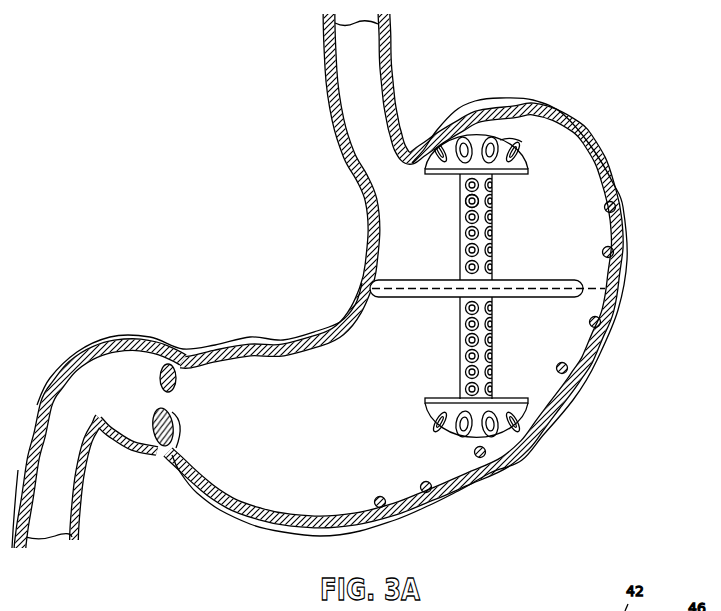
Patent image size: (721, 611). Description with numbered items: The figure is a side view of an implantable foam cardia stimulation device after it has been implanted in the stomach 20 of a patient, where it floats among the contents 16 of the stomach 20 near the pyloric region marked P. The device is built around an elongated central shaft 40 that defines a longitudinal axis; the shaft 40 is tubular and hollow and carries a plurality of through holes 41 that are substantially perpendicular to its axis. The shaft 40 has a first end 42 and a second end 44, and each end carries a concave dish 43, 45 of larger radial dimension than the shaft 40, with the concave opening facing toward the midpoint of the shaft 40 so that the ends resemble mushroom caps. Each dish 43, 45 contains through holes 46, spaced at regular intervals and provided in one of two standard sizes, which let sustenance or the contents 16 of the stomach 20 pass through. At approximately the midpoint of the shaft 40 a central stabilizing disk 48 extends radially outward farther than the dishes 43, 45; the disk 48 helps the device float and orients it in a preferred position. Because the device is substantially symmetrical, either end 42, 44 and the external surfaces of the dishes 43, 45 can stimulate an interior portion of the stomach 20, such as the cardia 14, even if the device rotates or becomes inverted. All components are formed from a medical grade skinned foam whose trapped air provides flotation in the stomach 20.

The cardia 14 is at (425, 140).
The contents of the stomach 16 is at (540, 348).
The stomach 20 is at (421, 502).
The pylorus P is at (163, 453).
The elongated central shaft 40 is at (478, 231).
The through holes 41 is at (478, 201).
The first end 42 is at (480, 133).
The concave dish 43 is at (548, 148).
The second end 44 is at (473, 440).
The concave dish 45 is at (516, 408).
The through holes 46 is at (502, 138).
The central stabilizing disk 48 is at (487, 275).